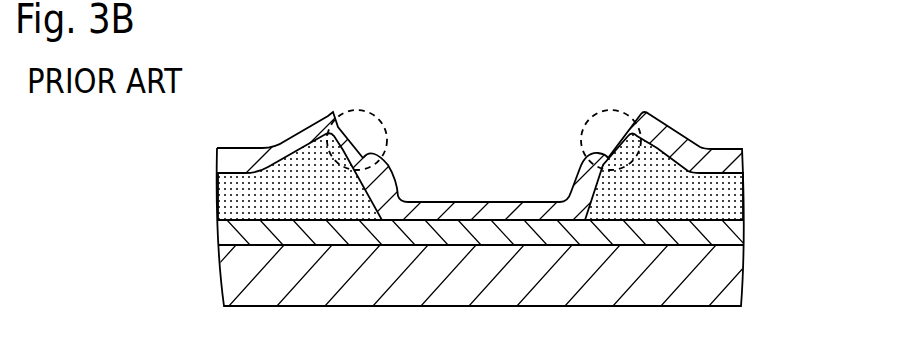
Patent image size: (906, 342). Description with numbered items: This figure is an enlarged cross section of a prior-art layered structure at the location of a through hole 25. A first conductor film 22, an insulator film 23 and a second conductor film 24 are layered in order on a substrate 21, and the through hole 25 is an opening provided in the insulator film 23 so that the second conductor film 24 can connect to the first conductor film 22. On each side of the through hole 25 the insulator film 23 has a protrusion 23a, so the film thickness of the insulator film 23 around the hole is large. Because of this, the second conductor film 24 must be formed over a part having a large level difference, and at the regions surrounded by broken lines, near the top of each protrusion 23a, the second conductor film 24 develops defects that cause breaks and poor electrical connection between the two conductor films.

The substrate 21 is at (743, 278).
The first conductor film 22 is at (744, 233).
The insulator film 23 is at (744, 198).
The protrusion 23a is at (347, 138).
The second conductor film 24 is at (743, 158).
The through hole 25 is at (396, 198).